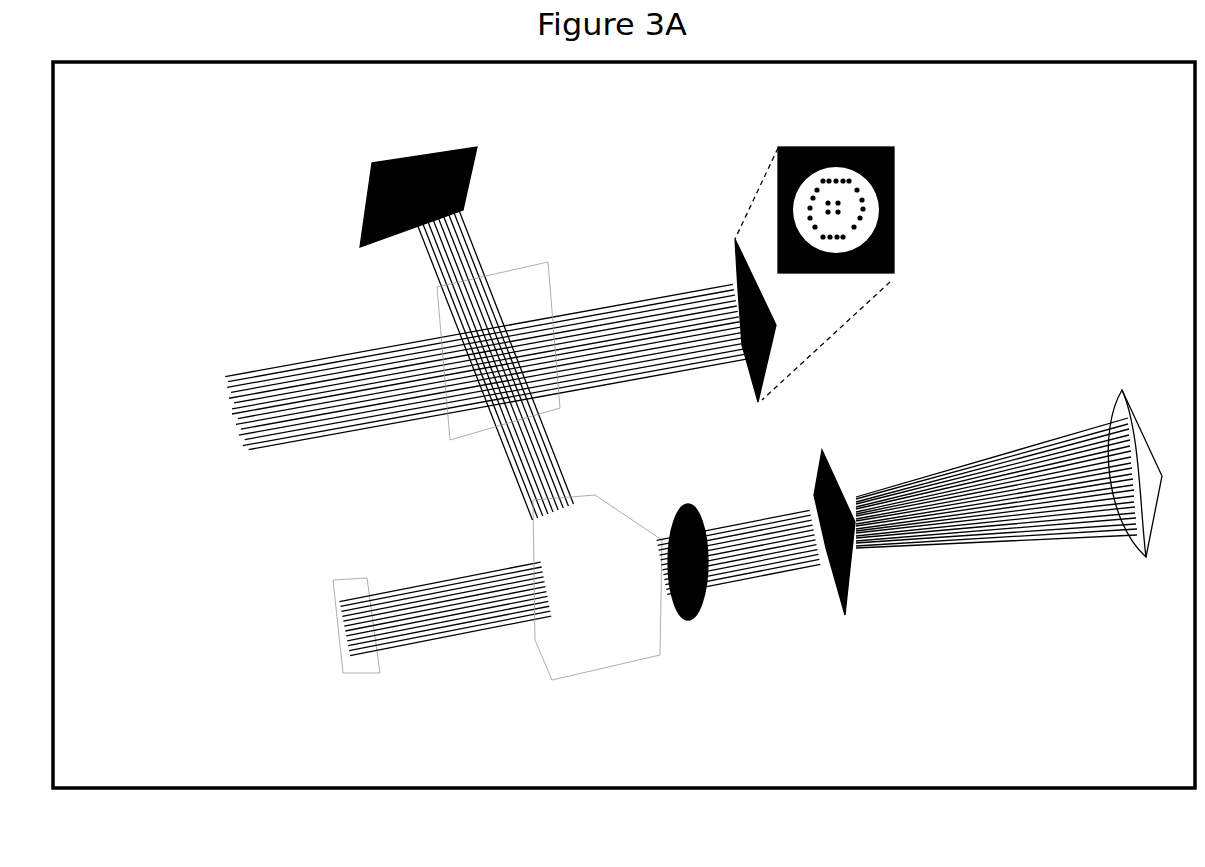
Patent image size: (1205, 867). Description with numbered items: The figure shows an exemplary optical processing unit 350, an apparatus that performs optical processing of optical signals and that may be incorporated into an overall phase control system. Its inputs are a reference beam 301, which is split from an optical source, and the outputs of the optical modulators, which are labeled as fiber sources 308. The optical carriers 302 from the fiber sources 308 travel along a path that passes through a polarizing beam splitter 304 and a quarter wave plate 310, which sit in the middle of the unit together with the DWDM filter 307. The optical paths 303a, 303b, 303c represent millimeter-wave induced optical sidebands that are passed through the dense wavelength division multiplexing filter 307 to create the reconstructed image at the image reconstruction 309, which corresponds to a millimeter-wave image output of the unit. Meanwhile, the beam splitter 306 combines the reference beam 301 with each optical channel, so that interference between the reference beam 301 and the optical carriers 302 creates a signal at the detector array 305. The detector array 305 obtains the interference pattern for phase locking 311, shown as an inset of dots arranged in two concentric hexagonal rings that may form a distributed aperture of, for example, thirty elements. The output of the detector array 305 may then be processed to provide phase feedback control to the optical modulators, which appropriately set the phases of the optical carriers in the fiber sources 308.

The reference beam 301 is at (290, 365).
The optical carriers 302 is at (570, 460).
The optical path 303a is at (448, 640).
The optical path 303b is at (787, 577).
The optical path 303c is at (1035, 545).
The polarizing beam splitter 304 is at (597, 672).
The detector array 305 is at (736, 255).
The beam splitter 306 is at (540, 293).
The dense wavelength division multiplexing (DWDM) filter 307 is at (740, 490).
The fiber sources 308 is at (340, 640).
The image reconstruction 309 is at (1120, 403).
The quarter wave plate 310 is at (710, 612).
The interference pattern for phase locking 311 is at (893, 208).
The optical processing unit 350 is at (720, 789).